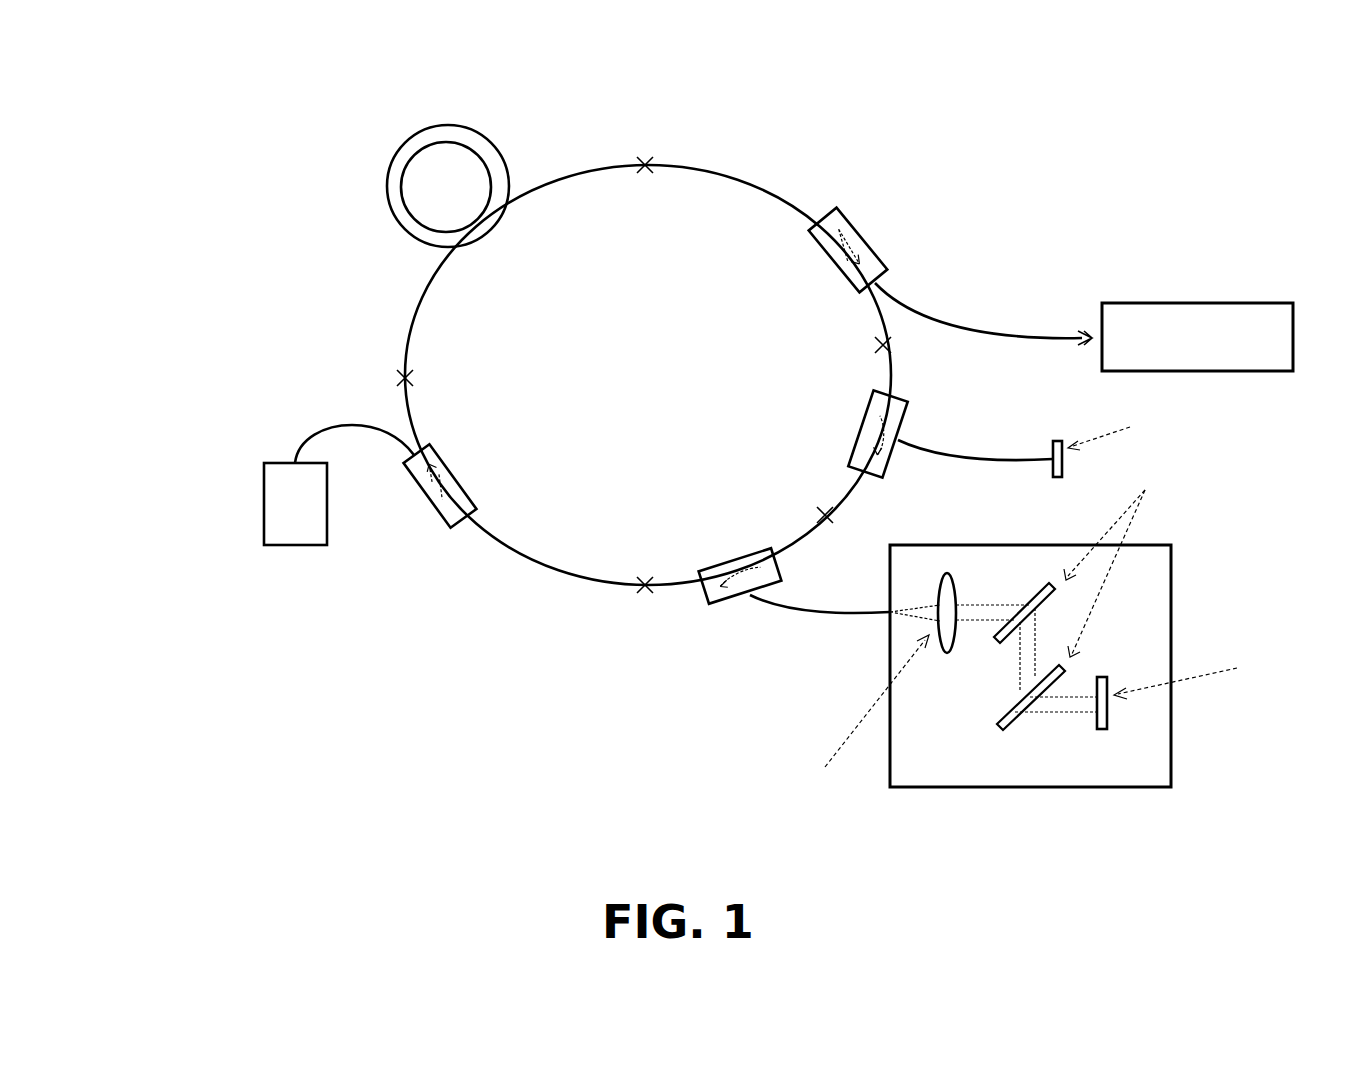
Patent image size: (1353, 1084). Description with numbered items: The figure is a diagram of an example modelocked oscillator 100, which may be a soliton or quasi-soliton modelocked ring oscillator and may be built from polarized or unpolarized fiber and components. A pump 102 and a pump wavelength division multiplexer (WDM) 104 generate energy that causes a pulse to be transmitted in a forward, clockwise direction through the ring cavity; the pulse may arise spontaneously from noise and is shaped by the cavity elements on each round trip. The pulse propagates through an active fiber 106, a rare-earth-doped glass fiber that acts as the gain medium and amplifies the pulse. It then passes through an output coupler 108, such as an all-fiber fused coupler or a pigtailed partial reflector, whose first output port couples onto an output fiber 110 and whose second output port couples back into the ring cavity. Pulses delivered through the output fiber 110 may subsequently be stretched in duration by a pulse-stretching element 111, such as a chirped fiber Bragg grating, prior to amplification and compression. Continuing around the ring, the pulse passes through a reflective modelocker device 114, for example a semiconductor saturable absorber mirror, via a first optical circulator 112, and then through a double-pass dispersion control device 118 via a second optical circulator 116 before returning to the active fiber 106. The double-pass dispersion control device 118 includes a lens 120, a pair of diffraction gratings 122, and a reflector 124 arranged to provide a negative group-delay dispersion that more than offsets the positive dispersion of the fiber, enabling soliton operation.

The modelocked oscillator 100 is at (178, 80).
The pump 102 is at (263, 505).
The pump wavelength division multiplexer 104 is at (540, 463).
The active fiber 106 is at (388, 192).
The output coupler 108 is at (926, 192).
The output fiber 110 is at (1018, 285).
The pulse-stretching element 111 is at (1200, 302).
The first optical circulator 112 is at (868, 408).
The reflective modelocker device 114 is at (1228, 430).
The second optical circulator 116 is at (735, 600).
The double-pass dispersion control device 118 is at (967, 790).
The lens 120 is at (750, 768).
The pair of diffraction gratings 122 is at (1210, 530).
The reflector 124 is at (1283, 688).